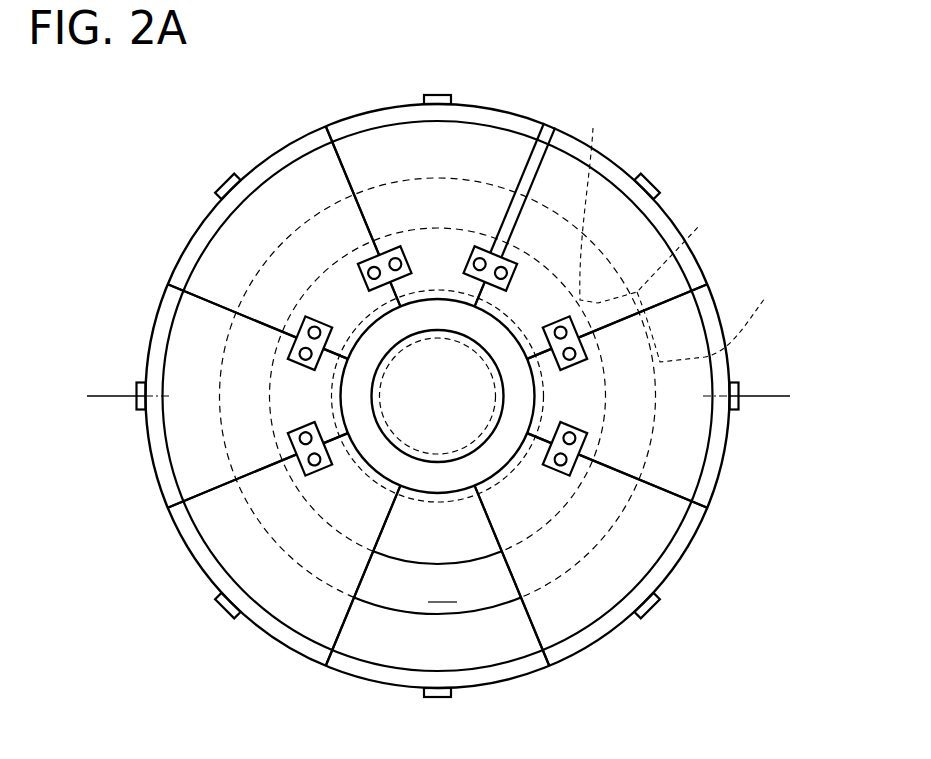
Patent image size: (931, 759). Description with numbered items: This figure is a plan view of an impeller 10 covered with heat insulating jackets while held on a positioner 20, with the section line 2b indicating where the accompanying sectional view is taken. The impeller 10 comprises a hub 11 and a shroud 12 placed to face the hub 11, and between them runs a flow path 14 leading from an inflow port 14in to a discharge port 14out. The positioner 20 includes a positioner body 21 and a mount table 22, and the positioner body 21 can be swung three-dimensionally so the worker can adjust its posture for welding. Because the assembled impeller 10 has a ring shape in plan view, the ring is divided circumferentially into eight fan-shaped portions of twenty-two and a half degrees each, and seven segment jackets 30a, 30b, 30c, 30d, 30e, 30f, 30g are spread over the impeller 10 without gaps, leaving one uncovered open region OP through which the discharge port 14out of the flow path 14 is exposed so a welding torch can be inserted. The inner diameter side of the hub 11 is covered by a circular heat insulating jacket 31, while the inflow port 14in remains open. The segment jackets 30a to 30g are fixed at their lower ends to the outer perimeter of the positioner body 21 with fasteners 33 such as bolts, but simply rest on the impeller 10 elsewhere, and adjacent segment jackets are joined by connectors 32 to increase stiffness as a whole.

The impeller 10 is at (542, 240).
The hub 11 is at (485, 345).
The shroud 12 is at (683, 232).
The flow path 14 is at (437, 615).
The inflow port 14in is at (499, 192).
The discharge port 14out is at (437, 603).
The positioner 20 is at (496, 396).
The positioner body 21 is at (730, 367).
The mount table 22 is at (765, 298).
The section line 2b- 2b is at (439, 426).
The segment jacket 30a is at (269, 549).
The segment jacket 30b is at (213, 395).
The segment jacket 30c is at (284, 237).
The segment jacket 30d is at (411, 186).
The segment jacket 30e is at (591, 239).
The segment jacket 30f is at (660, 395).
The segment jacket 30g is at (591, 559).
The circular heat insulating jacket 31 is at (462, 436).
The connector 32 is at (442, 318).
The fastener 33 is at (459, 369).